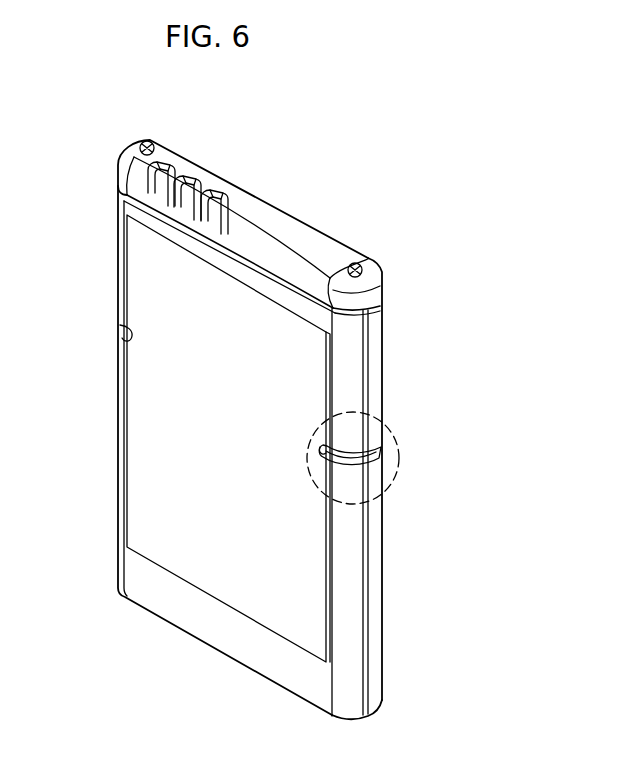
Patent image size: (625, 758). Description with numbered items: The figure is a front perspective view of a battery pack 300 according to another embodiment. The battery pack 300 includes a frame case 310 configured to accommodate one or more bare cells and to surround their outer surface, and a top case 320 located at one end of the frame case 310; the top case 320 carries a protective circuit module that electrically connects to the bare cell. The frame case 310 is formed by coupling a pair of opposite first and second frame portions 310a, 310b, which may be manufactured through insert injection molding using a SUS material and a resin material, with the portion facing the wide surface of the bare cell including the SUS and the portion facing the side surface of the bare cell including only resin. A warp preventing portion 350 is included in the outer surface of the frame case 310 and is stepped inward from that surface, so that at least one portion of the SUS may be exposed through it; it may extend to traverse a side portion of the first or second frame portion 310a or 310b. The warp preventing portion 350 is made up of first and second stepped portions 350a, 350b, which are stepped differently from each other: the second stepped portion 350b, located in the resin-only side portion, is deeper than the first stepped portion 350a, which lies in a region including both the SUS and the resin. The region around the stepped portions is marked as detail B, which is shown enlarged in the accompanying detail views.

The battery pack 300 is at (120, 138).
The top case 320 is at (248, 160).
The frame case 310 is at (484, 572).
The first frame portion 310a is at (320, 622).
The second frame portion 310b is at (382, 582).
The warp preventing portion 350 is at (494, 392).
The first stepped portion 350a is at (352, 458).
The second stepped portion 350b is at (327, 450).
The detail region B is at (397, 475).